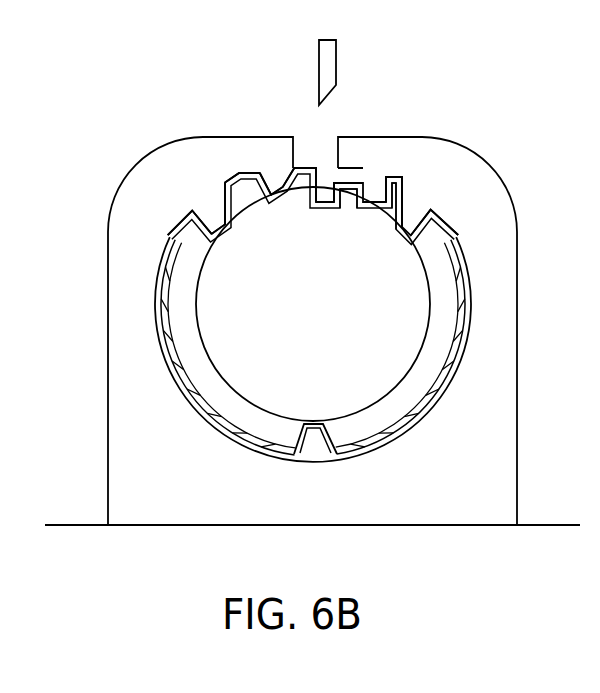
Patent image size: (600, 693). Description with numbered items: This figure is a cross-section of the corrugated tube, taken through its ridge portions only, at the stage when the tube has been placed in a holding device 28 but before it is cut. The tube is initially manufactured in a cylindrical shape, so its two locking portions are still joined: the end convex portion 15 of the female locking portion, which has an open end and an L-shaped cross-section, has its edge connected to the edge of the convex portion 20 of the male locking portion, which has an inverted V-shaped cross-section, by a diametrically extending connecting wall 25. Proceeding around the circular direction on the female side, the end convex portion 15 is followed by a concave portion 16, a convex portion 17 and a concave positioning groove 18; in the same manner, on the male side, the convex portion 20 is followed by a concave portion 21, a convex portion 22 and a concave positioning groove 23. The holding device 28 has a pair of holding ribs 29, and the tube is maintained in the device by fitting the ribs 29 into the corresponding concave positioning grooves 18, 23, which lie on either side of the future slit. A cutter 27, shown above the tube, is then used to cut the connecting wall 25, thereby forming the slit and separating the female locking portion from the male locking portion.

The end convex portion 15 is at (258, 174).
The concave portion 16 is at (290, 200).
The convex portion 17 is at (240, 176).
The concave positioning groove 18 is at (238, 238).
The convex portion 20 is at (355, 186).
The concave portion 21 is at (366, 213).
The convex portion 22 is at (392, 203).
The concave positioning groove 23 is at (400, 243).
The connecting wall 25 is at (317, 176).
The cutter 27 is at (329, 68).
The holding device 28 is at (107, 264).
The holding ribs 29 is at (215, 226).